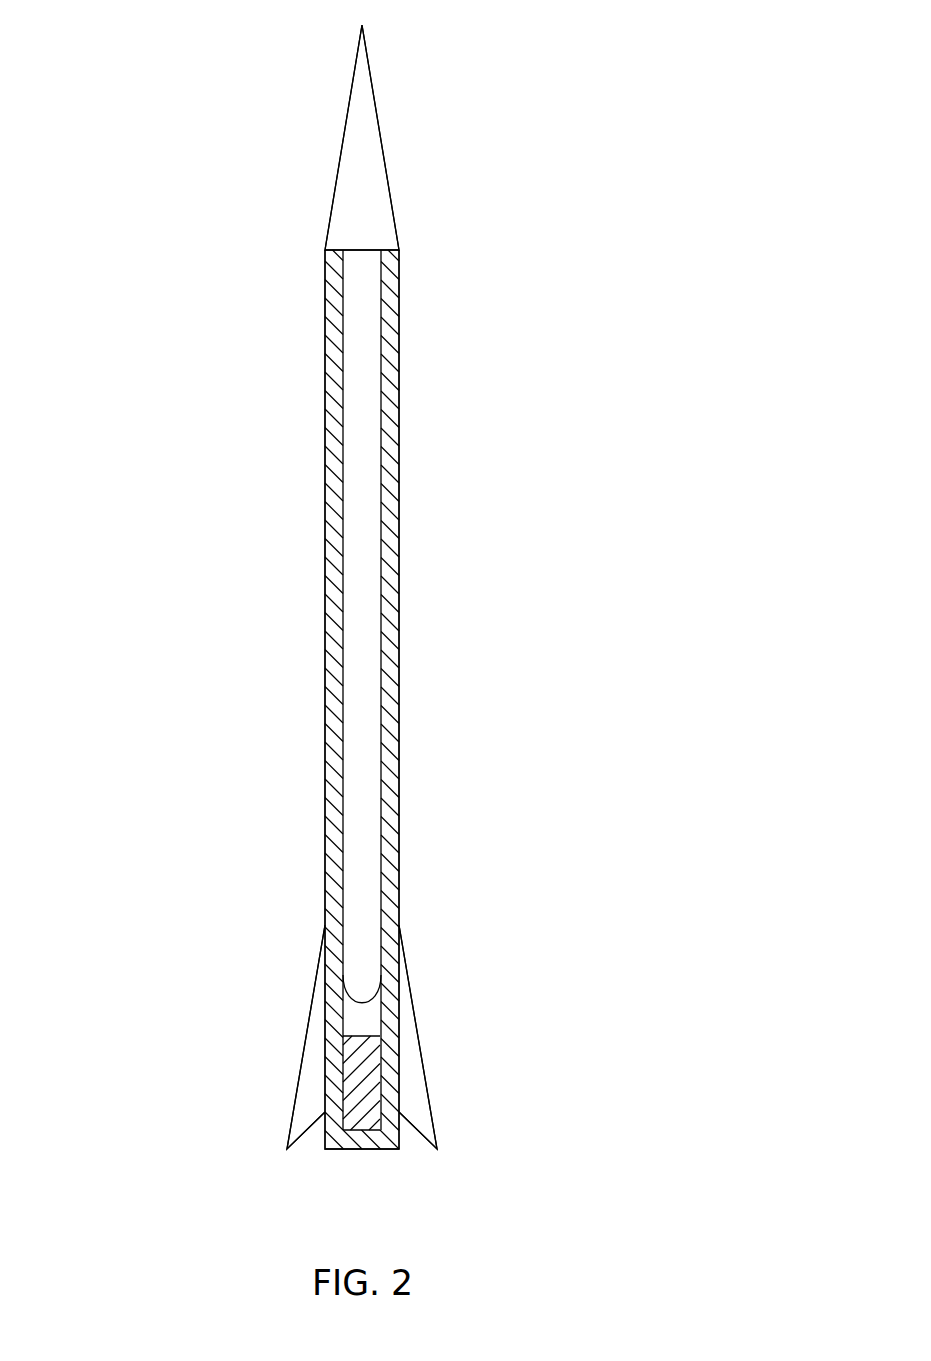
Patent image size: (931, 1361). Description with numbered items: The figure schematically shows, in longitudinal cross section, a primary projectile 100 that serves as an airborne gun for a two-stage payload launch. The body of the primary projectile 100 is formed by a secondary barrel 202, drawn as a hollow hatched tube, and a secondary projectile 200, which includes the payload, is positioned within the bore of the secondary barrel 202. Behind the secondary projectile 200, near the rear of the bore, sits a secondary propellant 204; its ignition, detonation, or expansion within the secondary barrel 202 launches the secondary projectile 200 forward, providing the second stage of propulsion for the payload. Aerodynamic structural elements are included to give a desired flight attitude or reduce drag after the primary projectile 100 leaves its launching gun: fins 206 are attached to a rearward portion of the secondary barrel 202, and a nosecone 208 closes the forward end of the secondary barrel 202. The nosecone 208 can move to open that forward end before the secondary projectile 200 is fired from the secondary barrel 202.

The primary projectile 100 is at (491, 438).
The secondary projectile 200 is at (367, 1018).
The secondary barrel 202 is at (363, 319).
The secondary propellant 204 is at (375, 1113).
The fins 206 is at (310, 1085).
The nosecone 208 is at (363, 203).